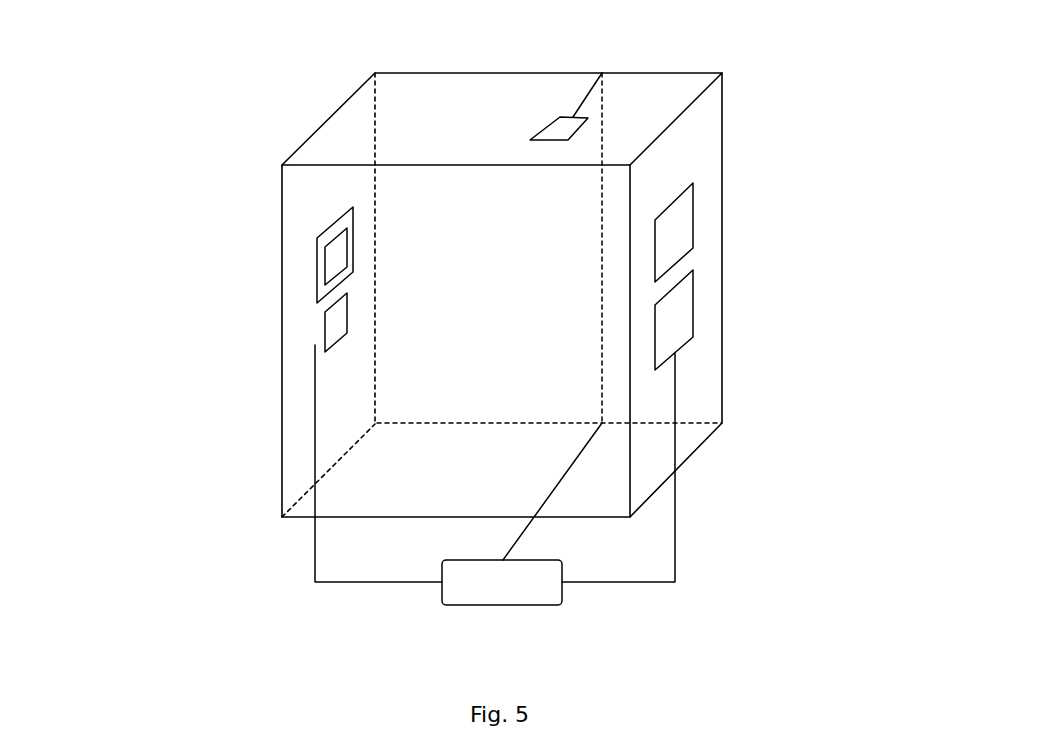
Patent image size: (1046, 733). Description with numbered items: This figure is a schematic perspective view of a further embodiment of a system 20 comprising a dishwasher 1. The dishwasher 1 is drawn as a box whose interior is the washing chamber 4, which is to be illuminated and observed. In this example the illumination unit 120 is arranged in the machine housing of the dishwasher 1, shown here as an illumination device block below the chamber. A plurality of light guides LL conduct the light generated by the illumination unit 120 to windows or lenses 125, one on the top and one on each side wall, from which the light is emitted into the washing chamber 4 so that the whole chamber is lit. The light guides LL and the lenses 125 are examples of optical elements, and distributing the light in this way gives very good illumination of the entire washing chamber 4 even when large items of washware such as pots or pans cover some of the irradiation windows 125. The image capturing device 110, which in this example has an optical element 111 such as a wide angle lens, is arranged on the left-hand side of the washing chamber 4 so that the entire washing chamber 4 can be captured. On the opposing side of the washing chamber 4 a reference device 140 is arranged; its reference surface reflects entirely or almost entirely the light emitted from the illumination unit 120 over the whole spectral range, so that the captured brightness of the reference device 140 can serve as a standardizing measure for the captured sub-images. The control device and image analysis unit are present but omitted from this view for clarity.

The system 20 is at (236, 87).
The dishwasher 1 is at (282, 387).
The washing chamber 4 is at (486, 296).
The image capturing device 110 is at (325, 268).
The optical element 111 is at (330, 229).
The windows or lenses 125 is at (775, 339).
The reference device 140 is at (693, 222).
The illumination unit 120 is at (535, 605).
The light guides LL is at (582, 92).